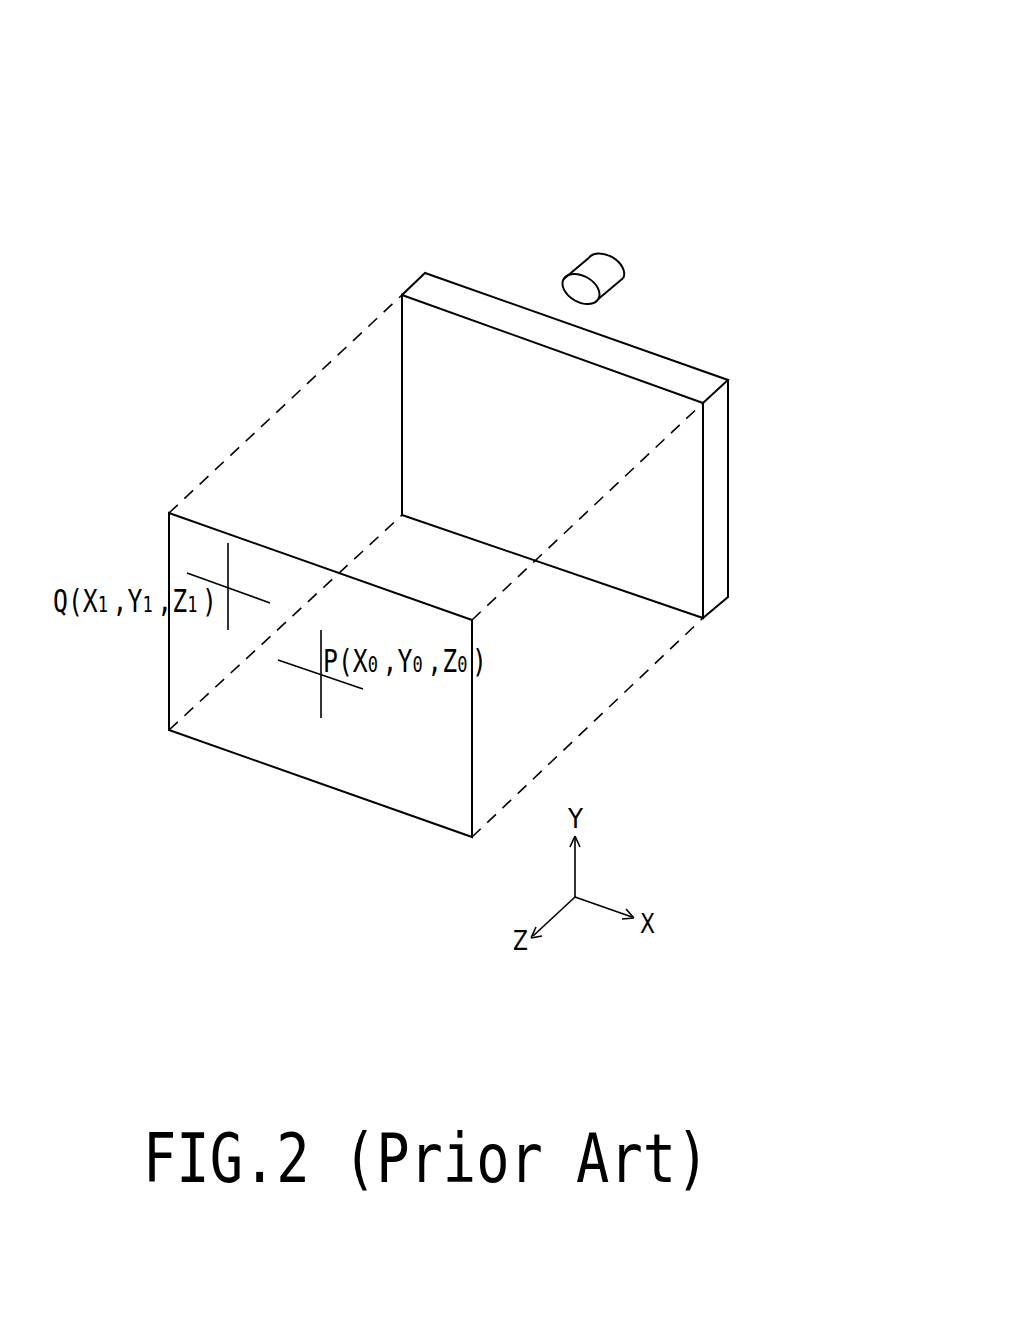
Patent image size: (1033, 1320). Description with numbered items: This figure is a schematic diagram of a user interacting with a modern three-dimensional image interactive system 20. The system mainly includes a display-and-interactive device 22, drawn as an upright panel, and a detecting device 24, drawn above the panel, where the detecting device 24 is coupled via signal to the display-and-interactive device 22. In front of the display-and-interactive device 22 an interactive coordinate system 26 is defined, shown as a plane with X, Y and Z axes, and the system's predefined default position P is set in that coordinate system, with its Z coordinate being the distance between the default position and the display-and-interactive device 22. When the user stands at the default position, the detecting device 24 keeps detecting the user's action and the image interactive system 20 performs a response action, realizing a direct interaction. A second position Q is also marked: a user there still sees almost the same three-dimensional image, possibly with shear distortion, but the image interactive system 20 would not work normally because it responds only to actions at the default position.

The 3D image interactive system 20 is at (653, 156).
The display-and-interactive device 22 is at (673, 378).
The detecting device 24 is at (600, 260).
The interactive coordinate system 26 is at (318, 770).